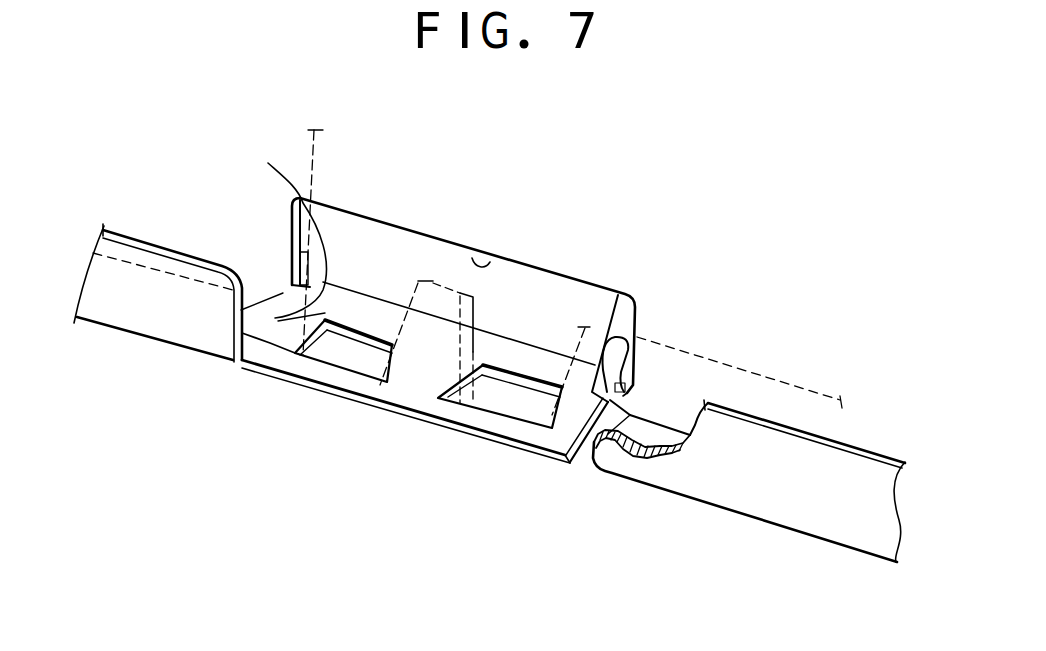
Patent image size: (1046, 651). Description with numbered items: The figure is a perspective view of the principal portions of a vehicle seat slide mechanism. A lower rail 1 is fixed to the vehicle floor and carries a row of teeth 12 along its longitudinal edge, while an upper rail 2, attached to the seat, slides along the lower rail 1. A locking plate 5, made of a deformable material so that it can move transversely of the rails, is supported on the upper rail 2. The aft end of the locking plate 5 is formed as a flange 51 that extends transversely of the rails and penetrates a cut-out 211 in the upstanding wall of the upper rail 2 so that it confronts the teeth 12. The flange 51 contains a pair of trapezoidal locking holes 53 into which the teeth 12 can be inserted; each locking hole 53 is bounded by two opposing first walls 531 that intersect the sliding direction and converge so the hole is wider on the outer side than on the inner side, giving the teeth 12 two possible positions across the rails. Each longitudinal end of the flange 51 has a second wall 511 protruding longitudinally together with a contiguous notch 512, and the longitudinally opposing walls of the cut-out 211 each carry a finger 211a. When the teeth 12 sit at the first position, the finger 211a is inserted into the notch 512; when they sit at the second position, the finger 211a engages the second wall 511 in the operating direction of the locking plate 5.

The lower rail 1 is at (436, 272).
The teeth 12 is at (350, 313).
The upper rail 2 is at (700, 515).
The cut-out 211 is at (490, 262).
The finger 211a is at (293, 300).
The locking plate 5 is at (341, 404).
The flange 51 is at (413, 377).
The second wall 511 is at (268, 341).
The notch 512 is at (300, 196).
The locking hole 53 is at (347, 353).
The first wall 531 is at (281, 356).